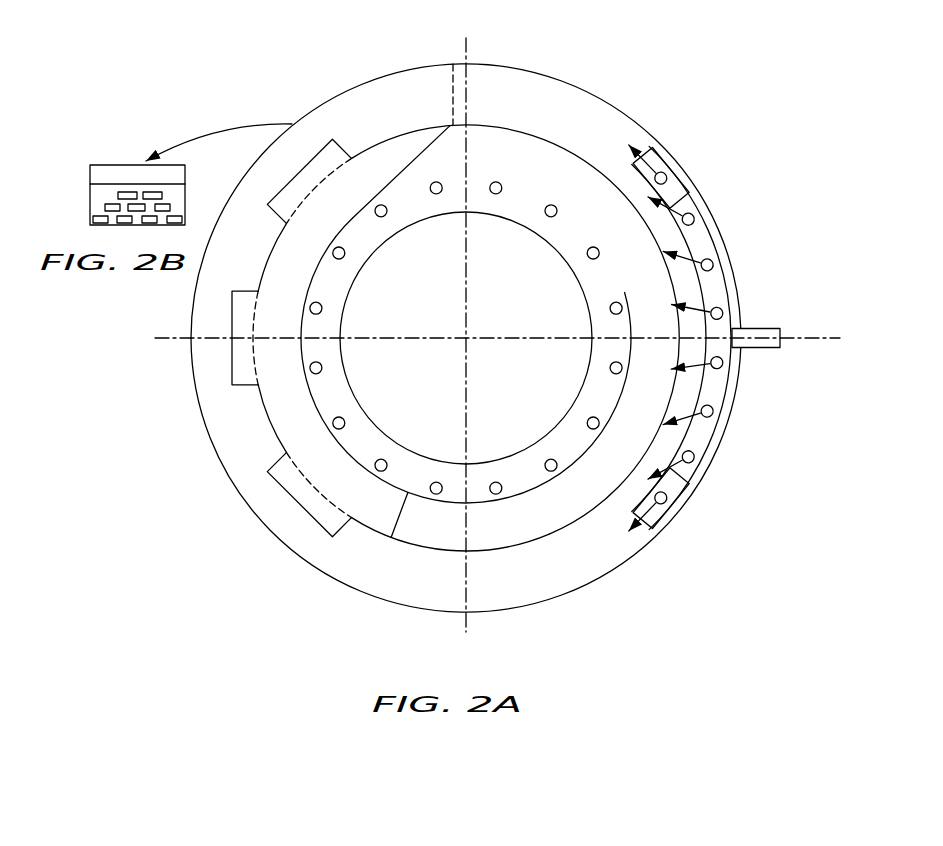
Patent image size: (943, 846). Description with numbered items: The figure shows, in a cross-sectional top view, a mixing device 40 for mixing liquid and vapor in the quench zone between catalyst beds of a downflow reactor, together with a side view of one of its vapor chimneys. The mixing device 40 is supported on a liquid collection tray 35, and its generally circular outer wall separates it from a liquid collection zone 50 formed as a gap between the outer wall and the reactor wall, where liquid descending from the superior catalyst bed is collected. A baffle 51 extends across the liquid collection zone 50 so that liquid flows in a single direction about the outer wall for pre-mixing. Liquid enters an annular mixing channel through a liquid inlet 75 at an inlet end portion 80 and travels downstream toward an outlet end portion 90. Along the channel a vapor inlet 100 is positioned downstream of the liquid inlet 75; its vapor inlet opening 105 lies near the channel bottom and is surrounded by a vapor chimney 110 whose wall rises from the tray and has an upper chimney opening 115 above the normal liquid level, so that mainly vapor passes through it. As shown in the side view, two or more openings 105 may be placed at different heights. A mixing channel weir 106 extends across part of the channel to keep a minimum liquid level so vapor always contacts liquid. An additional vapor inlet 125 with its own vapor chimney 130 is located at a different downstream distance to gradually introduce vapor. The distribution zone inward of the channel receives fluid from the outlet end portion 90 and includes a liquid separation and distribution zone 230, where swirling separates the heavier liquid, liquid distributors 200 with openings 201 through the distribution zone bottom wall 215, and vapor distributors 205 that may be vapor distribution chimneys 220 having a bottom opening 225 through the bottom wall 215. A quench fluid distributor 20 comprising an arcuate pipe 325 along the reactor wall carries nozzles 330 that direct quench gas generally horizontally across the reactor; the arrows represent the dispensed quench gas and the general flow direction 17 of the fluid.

In FIG. 2A, the air flow 17 is at (681, 302).
In FIG. 2A, the quench fluid distributor 20 is at (709, 236).
In FIG. 2A, the liquid collection tray 35 is at (206, 401).
In FIG. 2A, the mixing device 40 is at (554, 541).
In FIG. 2A, the liquid collection zone 50 is at (351, 577).
In FIG. 2A, the baffle 51 is at (454, 112).
In FIG. 2A, the liquid inlet 75 is at (408, 136).
In FIG. 2A, the inlet end portion 80 is at (375, 143).
In FIG. 2A, the outlet end portion 90 is at (623, 282).
In FIG. 2A, the vapor inlet 100 is at (307, 184).
In FIG. 2B, the vapor inlet opening 105 is at (108, 207).
In FIG. 2A, the mixing channel weir 106 is at (398, 538).
In FIG. 2B, the vapor chimney 110 is at (102, 172).
In FIG. 2B, the upper chimney opening 115 is at (121, 172).
In FIG. 2A, the additional vapor inlet 125 is at (254, 359).
In FIG. 2A, the vapor chimney 130 is at (232, 313).
In FIG. 2A, the liquid distributor 200 is at (498, 495).
In FIG. 2A, the opening 201 is at (262, 392).
In FIG. 2A, the vapor distributor 205 is at (328, 474).
In FIG. 2A, the distribution zone bottom wall 215 is at (541, 199).
In FIG. 2A, the vapor distribution chimney 220 is at (544, 241).
In FIG. 2A, the bottom opening 225 is at (287, 453).
In FIG. 2A, the liquid separation and distribution zone 230 is at (591, 459).
In FIG. 2A, the pipe 325 is at (713, 443).
In FIG. 2A, the nozzles 330 is at (690, 206).